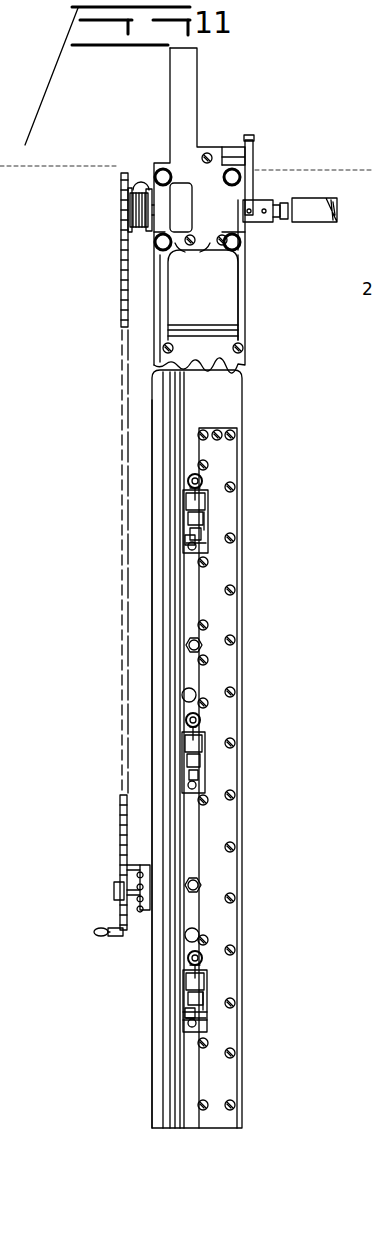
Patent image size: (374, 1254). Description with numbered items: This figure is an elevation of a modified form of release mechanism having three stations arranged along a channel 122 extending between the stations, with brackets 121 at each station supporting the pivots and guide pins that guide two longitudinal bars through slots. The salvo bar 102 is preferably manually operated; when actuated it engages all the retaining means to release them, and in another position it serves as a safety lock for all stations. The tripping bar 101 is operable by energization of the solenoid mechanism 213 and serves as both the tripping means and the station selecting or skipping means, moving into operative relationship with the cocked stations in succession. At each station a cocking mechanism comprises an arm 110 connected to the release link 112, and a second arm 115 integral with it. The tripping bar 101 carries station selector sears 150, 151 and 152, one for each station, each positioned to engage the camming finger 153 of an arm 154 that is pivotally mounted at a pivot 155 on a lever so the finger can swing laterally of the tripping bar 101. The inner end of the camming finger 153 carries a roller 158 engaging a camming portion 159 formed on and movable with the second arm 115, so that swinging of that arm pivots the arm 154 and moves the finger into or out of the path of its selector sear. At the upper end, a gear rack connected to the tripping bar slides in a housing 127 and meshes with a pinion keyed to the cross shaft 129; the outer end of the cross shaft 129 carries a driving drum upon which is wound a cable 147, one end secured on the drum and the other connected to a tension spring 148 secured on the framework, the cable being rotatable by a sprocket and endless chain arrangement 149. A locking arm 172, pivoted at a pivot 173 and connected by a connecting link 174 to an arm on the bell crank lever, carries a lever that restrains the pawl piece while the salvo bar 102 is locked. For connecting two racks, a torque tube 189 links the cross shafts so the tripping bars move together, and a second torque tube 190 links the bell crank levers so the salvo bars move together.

The tripping bar 101 is at (181, 392).
The salvo bar 102 is at (167, 404).
The arm 110 is at (207, 490).
The release link 112 is at (204, 478).
The second arm 115 is at (203, 520).
The brackets 121 is at (203, 783).
The channel 122 is at (240, 712).
The housing 127 is at (177, 108).
The cross shaft 129 is at (123, 212).
The cable 147 is at (140, 232).
The tension spring 148 is at (140, 180).
The sprocket and endless chain arrangement 149 is at (124, 303).
The station selector sear 150 is at (182, 1010).
The station selector sear 151 is at (184, 743).
The station selector sear 152 is at (181, 470).
The camming finger 153 is at (185, 540).
The arm 154 is at (188, 548).
The pivot 155 is at (205, 547).
The roller 158 is at (188, 1003).
The camming portion 159 is at (205, 995).
The locking arm 172 is at (250, 143).
The pivot 173 is at (232, 147).
The connecting link 174 is at (253, 173).
The torque tube 189 is at (323, 196).
The second torque tube 190 is at (250, 224).
The solenoid mechanism 213 is at (232, 272).